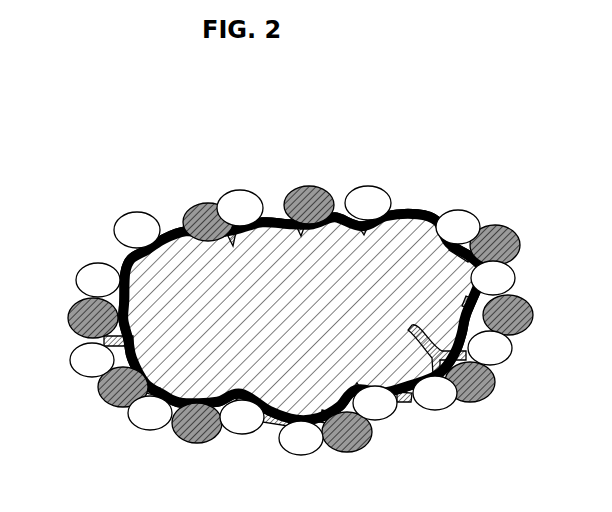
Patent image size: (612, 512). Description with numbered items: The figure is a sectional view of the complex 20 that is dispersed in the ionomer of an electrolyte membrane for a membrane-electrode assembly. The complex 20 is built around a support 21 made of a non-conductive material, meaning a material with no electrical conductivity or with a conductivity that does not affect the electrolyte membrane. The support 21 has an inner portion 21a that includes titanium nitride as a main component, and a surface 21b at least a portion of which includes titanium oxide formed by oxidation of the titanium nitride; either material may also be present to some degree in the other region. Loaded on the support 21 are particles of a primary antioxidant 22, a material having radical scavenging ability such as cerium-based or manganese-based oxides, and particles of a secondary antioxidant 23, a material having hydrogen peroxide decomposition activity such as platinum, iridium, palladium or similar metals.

The complex 20 is at (63, 170).
The support 21 is at (314, 277).
The inner portion 21a is at (178, 250).
The surface 21b is at (430, 212).
The primary antioxidant 22 is at (310, 190).
The secondary antioxidant 23 is at (370, 198).